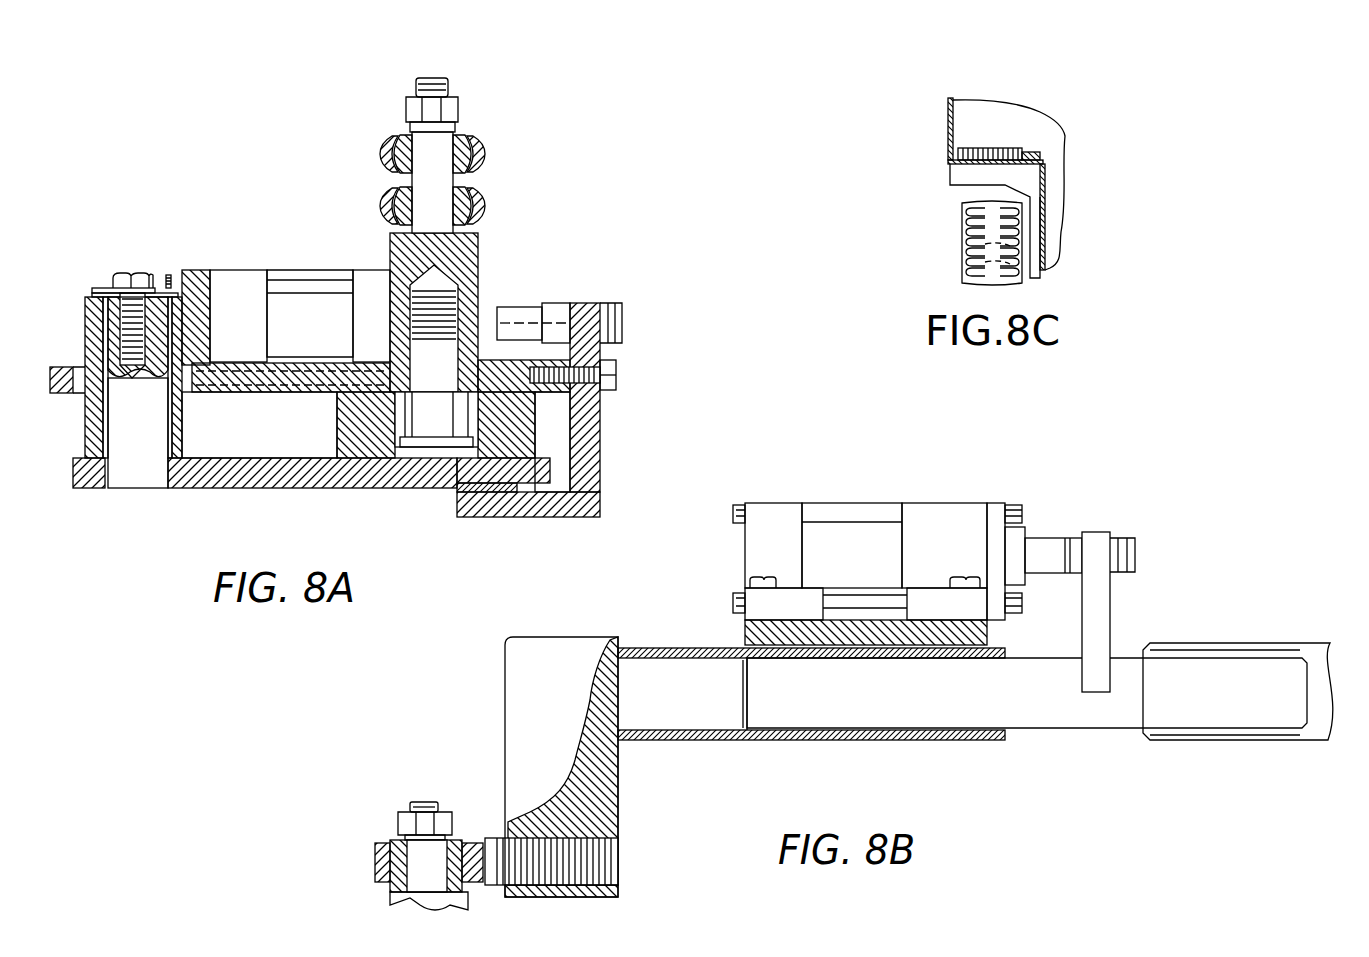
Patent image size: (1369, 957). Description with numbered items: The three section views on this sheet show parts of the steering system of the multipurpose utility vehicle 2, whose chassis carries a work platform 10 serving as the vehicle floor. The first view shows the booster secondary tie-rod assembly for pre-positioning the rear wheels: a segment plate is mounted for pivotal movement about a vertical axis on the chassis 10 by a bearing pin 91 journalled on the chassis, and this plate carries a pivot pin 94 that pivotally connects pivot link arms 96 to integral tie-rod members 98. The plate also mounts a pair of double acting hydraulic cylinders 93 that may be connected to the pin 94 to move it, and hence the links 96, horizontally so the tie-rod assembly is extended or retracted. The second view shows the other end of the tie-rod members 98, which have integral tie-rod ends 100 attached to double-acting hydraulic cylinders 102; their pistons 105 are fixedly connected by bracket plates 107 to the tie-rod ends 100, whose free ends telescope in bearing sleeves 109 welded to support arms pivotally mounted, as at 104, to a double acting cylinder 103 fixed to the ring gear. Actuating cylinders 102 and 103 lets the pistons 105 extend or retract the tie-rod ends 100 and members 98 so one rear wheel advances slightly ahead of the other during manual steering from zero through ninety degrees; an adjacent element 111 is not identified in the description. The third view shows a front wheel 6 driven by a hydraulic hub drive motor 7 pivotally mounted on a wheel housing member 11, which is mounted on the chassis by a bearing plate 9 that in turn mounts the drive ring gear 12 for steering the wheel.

In FIG. 8A, the multipurpose utility vehicle 2 is at (65, 370).
In FIG. 8A, the work platform 10 is at (296, 481).
In FIG. 8C, the work platform 10 is at (946, 97).
In FIG. 8A, the bearing pin 91 is at (121, 272).
In FIG. 8A, the double acting hydraulic cylinders 93 is at (235, 290).
In FIG. 8A, the pivot pin 94 is at (448, 82).
In FIG. 8A, the pivot link arms 96 is at (485, 158).
In FIG. 8C, the front wheels 6 is at (962, 222).
In FIG. 8C, the hydraulic hub drive motor 7 is at (958, 245).
In FIG. 8C, the bearing plate 9 is at (976, 163).
In FIG. 8C, the wheel housing member 11 is at (998, 172).
In FIG. 8C, the drive ring gear 12 is at (1005, 150).
In FIG. 8B, the integral tie-rod members 98 is at (1225, 645).
In FIG. 8B, the tie-rod ends 100 is at (1107, 715).
In FIG. 8B, the hydraulic cylinders 102 is at (955, 502).
In FIG. 8B, the double acting cylinder 103 is at (425, 898).
In FIG. 8B, the pivotal attachment 104 is at (425, 800).
In FIG. 8B, the pistons 105 is at (1047, 548).
In FIG. 8B, the bracket plates 107 is at (1098, 603).
In FIG. 8B, the bearing sleeves 109 is at (790, 740).
In FIG. 8B, the block 111 is at (522, 661).